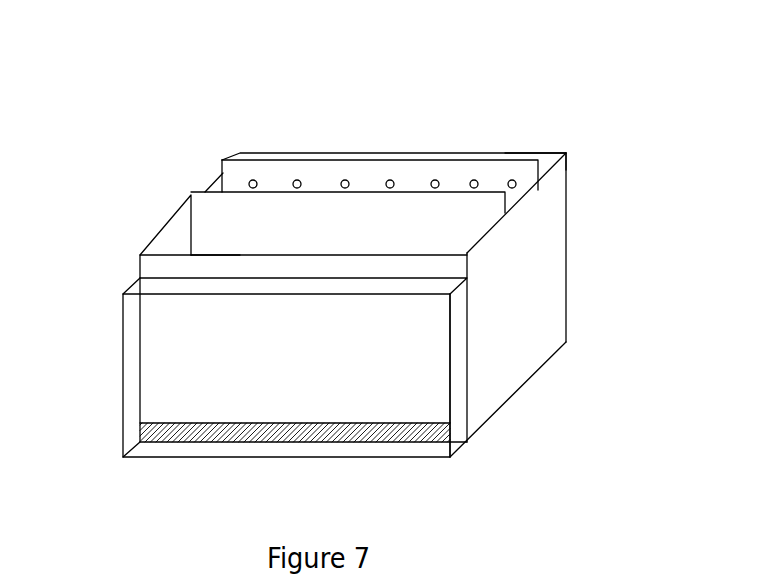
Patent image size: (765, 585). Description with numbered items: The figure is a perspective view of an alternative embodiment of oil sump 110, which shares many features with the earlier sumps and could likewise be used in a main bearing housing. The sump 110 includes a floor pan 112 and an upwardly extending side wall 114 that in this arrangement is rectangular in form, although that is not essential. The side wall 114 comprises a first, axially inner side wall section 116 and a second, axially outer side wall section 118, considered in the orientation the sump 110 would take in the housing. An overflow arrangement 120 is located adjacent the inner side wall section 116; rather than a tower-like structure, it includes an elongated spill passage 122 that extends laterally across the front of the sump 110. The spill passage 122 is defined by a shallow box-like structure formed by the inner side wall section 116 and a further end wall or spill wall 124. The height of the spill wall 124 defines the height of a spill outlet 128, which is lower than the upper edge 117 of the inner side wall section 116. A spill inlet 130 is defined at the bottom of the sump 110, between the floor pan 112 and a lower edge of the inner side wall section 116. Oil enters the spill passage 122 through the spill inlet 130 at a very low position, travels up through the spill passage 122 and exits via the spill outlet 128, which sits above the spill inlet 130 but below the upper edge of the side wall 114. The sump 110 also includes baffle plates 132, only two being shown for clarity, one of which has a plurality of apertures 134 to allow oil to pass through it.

The sump 110 is at (538, 86).
The floor pan 112 is at (536, 370).
The side wall 114 is at (530, 272).
The inner side wall section 116 is at (165, 267).
The upper edge 117 is at (212, 257).
The outer side wall section 118 is at (257, 152).
The overflow arrangement 120 is at (118, 393).
The spill passage 122 is at (455, 390).
The spill wall 124 is at (123, 323).
The spill outlet 128 is at (442, 283).
The spill inlet 130 is at (340, 440).
The baffle plates 132 is at (507, 168).
The apertures 134 is at (435, 173).